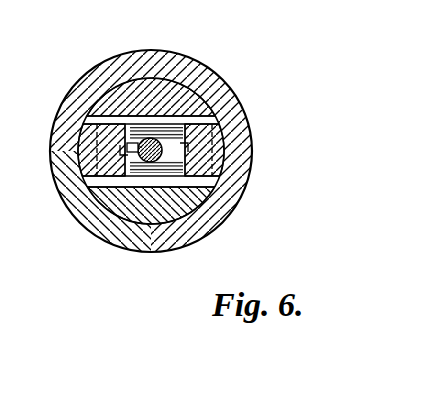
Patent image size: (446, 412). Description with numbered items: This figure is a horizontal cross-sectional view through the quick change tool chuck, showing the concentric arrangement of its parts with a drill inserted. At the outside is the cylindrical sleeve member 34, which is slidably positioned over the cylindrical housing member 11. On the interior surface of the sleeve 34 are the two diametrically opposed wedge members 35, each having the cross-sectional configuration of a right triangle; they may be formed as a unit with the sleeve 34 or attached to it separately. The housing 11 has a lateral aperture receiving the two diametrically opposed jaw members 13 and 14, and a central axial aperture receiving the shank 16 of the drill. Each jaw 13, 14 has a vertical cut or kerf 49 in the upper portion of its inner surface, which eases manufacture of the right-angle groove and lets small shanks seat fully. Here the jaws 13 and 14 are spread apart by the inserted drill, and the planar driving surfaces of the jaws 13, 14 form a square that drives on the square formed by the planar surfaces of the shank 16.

The cylindrical housing member 11 is at (160, 100).
The jaw member 13 is at (82, 174).
The jaw member 14 is at (218, 165).
The shank 16 is at (172, 180).
The cylindrical sleeve member 34 is at (208, 92).
The wedge member 35 is at (80, 143).
The kerf 49 is at (140, 135).